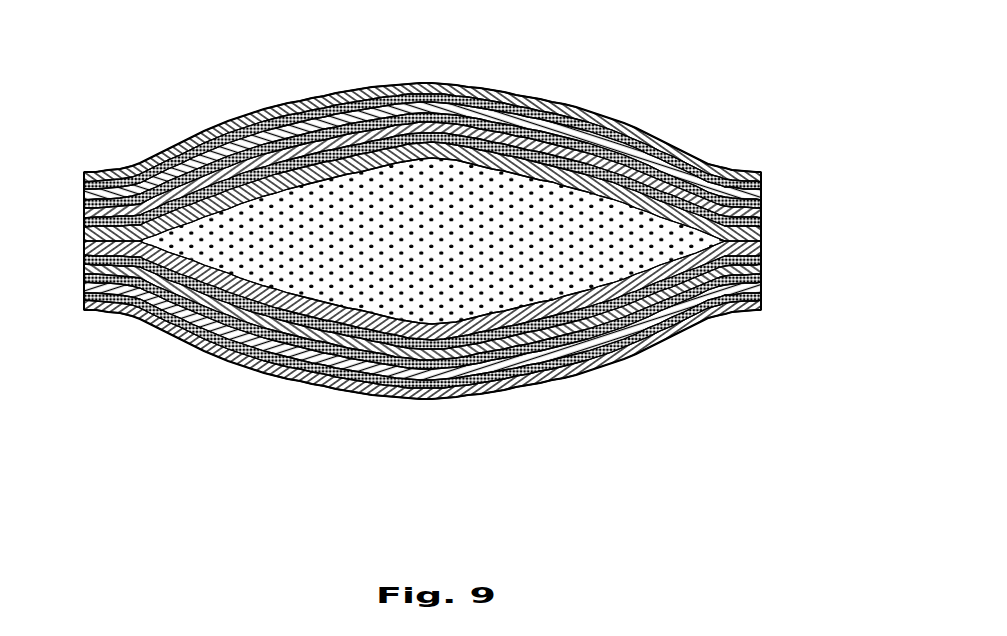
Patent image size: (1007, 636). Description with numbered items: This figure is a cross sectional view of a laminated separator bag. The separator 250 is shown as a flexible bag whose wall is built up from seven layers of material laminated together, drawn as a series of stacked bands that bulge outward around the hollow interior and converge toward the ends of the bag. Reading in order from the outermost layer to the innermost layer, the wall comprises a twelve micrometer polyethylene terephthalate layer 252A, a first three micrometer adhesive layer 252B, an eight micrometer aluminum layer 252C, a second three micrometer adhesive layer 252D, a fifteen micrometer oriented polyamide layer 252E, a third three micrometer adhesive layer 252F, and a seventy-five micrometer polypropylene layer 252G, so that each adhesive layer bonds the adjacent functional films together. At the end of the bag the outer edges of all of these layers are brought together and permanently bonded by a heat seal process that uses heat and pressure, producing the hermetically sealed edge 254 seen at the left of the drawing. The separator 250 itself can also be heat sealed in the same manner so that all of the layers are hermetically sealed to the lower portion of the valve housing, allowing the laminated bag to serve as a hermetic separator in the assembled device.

The separator 250 is at (211, 115).
The hermetically sealed edge 254 is at (75, 188).
The polyethylene terephthalate layer 252A is at (732, 162).
The first adhesive layer 252B is at (753, 183).
The aluminum layer 252C is at (753, 192).
The second adhesive layer 252D is at (753, 198).
The oriented polyamide layer 252E is at (753, 207).
The third adhesive layer 252F is at (753, 217).
The polypropylene layer 252G is at (753, 240).